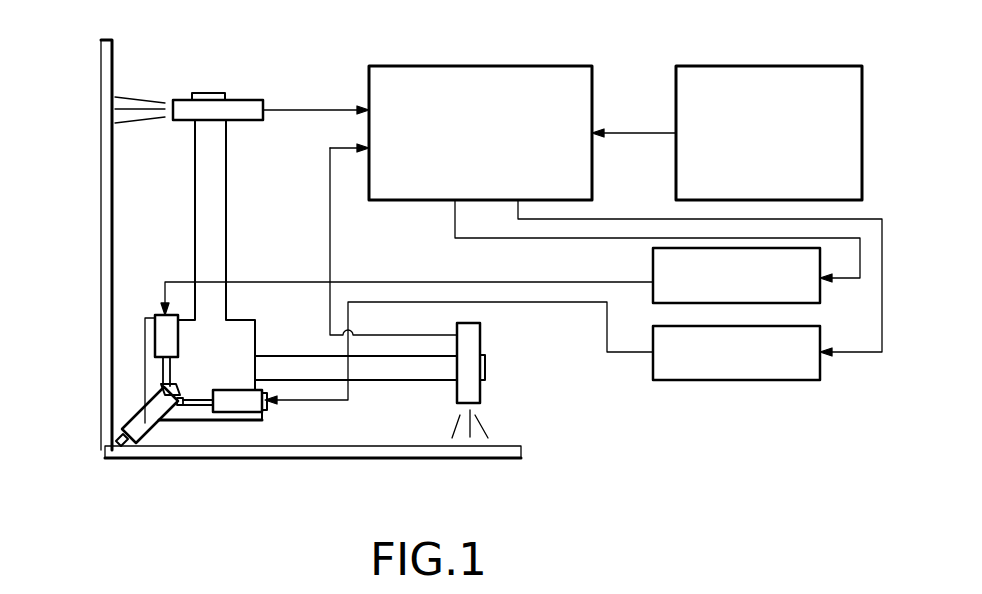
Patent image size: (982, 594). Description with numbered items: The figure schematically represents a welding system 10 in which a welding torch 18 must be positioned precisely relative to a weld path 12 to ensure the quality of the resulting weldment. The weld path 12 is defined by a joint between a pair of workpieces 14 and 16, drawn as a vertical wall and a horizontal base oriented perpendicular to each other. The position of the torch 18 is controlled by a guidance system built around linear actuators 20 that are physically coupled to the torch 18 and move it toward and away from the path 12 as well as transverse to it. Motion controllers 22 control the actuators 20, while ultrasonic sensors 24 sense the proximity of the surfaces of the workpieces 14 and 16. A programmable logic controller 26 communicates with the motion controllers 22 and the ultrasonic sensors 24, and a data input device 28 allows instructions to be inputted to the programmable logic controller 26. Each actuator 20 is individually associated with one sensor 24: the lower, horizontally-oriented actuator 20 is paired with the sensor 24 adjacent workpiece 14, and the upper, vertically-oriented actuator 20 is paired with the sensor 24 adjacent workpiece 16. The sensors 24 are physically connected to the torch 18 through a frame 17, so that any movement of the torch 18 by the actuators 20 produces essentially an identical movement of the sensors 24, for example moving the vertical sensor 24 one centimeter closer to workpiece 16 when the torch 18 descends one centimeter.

The welding system 10 is at (678, 433).
The weld path 12 is at (103, 450).
The workpiece 14 is at (110, 80).
The workpiece 16 is at (225, 460).
The frame 17 is at (148, 370).
The welding torch 18 is at (148, 420).
The linear actuator 20 is at (163, 338).
The motion controller 22 is at (653, 292).
The ultrasonic sensor 24 is at (238, 107).
The programmable logic controller 26 is at (527, 72).
The data input device 28 is at (770, 80).